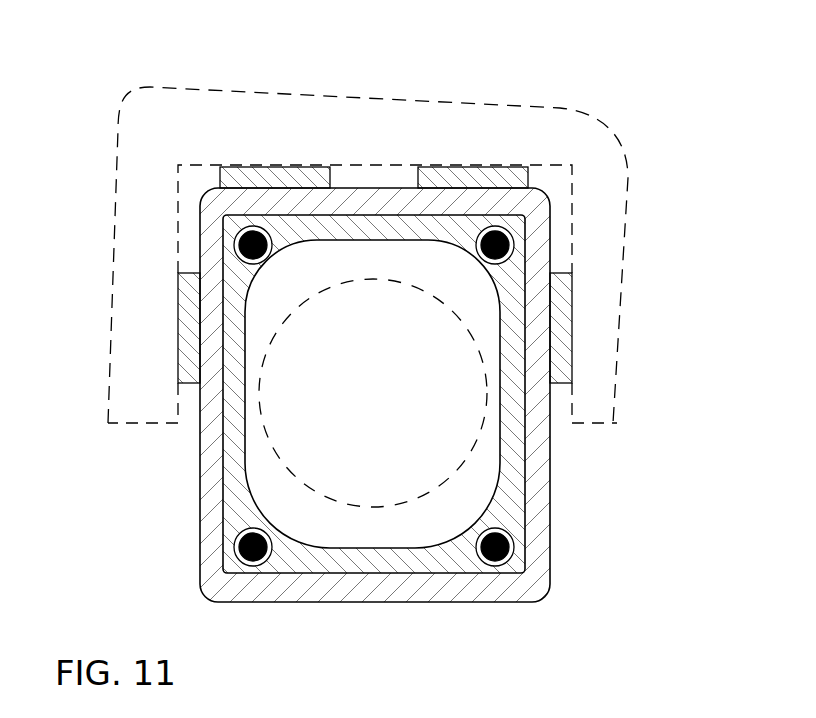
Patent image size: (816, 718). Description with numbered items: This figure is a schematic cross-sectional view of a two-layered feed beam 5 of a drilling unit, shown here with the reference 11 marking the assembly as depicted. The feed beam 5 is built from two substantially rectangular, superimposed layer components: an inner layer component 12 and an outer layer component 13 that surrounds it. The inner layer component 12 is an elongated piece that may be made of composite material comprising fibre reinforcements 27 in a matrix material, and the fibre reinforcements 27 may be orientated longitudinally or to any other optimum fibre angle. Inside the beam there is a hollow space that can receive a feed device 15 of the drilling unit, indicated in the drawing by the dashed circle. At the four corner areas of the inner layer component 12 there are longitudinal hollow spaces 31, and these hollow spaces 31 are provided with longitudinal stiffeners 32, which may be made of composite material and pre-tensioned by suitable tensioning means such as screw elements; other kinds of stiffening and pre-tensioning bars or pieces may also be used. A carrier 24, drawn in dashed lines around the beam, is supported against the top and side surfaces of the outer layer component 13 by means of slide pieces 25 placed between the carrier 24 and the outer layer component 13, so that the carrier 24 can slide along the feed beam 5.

The feed beam 5 is at (408, 356).
The frame 11 is at (171, 442).
The inner layer component 12 is at (352, 560).
The outer layer component 13 is at (542, 507).
The feed device 15 is at (295, 480).
The carrier 24 is at (578, 115).
The slide pieces 25 is at (277, 177).
The fibre reinforcements 27 is at (525, 438).
The longitudinal hollow spaces 31 is at (235, 535).
The longitudinal stiffeners 32 is at (260, 562).